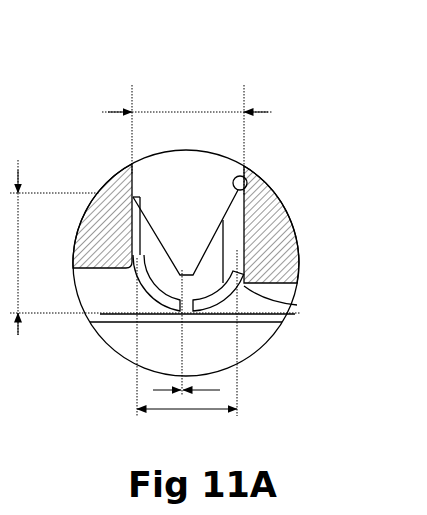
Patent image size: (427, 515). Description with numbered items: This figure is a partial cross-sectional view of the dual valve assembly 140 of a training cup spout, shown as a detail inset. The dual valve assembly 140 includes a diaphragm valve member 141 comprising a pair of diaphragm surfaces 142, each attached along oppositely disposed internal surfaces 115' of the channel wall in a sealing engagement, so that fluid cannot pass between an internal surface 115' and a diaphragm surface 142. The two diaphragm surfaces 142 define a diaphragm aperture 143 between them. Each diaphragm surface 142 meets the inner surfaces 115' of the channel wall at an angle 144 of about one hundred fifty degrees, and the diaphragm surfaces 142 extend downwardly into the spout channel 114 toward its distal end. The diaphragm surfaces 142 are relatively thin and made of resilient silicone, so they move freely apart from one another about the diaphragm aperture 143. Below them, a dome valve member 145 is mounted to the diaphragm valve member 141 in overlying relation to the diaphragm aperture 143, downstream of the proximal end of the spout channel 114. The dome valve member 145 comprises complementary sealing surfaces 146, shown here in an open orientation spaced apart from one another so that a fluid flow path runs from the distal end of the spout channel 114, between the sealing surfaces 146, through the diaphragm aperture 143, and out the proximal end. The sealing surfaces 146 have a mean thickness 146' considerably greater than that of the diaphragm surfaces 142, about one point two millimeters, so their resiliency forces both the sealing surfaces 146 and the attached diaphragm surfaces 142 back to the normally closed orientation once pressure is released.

The spout channel 114 is at (204, 172).
The internal surface of the channel wall 115' is at (322, 159).
The dual valve assembly 140 is at (247, 153).
The diaphragm valve member 141 is at (205, 272).
The diaphragm surface 142 is at (137, 268).
The diaphragm aperture 143 is at (190, 272).
The angle 144 is at (160, 279).
The dome valve member 145 is at (222, 308).
The complementary sealing surface 146 is at (219, 329).
The mean thickness of the sealing surfaces 146' is at (103, 326).